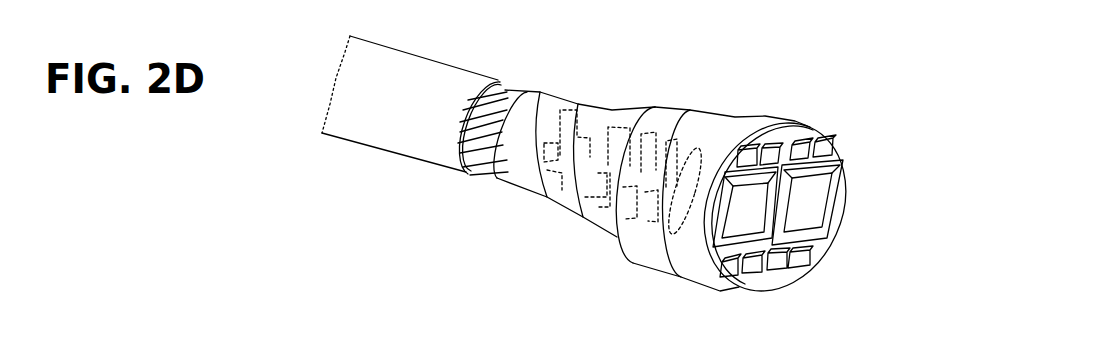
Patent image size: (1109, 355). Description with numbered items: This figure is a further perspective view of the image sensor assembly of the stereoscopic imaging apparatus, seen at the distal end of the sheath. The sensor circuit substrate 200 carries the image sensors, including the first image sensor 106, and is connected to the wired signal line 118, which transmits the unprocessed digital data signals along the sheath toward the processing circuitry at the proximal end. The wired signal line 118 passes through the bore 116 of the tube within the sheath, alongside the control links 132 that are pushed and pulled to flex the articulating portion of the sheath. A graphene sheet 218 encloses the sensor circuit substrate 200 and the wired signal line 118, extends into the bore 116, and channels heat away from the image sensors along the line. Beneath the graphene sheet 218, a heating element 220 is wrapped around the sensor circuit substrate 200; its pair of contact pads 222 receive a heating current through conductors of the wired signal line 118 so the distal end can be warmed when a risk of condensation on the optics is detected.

The first image sensor 106 is at (315, 222).
The control links 132 is at (416, 58).
The bore 116 is at (500, 84).
The wired signal line 118 is at (492, 179).
The contact pads 222 is at (552, 142).
The heating element 220 is at (627, 130).
The graphene sheet 218 is at (637, 117).
The sensor circuit substrate 200 is at (838, 112).